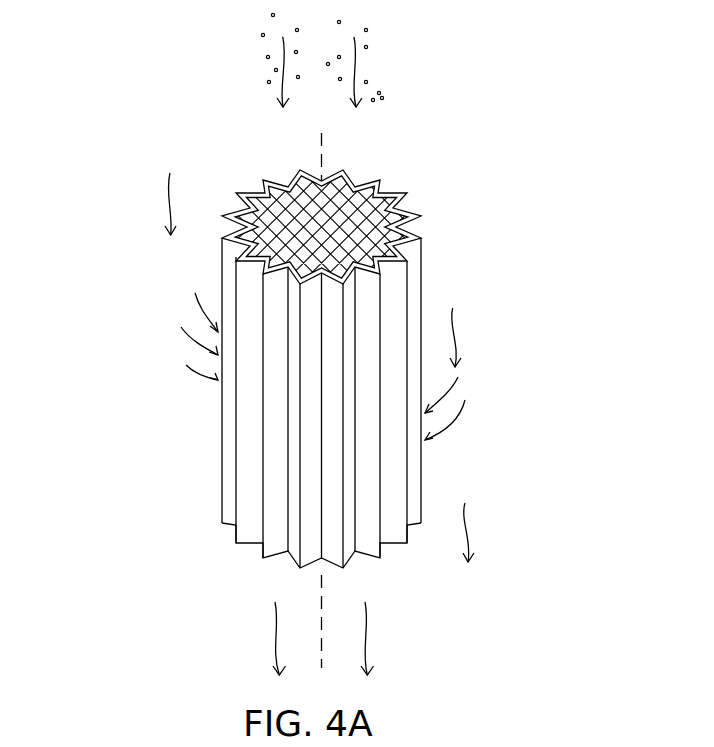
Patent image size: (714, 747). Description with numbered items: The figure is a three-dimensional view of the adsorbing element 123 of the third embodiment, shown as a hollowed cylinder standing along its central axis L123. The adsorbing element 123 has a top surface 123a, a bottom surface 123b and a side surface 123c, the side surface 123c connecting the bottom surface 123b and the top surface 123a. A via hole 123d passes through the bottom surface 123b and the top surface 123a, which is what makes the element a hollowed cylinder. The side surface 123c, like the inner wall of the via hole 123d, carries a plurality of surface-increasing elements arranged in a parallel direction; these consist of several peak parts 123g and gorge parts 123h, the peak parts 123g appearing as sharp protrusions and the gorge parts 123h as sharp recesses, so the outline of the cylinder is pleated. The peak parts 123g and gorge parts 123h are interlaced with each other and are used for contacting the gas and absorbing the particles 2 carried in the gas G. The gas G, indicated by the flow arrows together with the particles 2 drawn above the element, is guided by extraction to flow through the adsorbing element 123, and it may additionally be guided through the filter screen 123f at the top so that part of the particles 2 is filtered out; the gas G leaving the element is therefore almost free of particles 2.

The adsorbing element 123 is at (630, 566).
The top surface 123a is at (417, 215).
The bottom surface 123b is at (393, 551).
The side surface 123c is at (198, 440).
The via hole 123d is at (257, 197).
The filter screen 123f is at (272, 192).
The peak parts 123g is at (407, 193).
The gorge parts 123h is at (380, 190).
The particles 2 is at (425, 445).
The central axis of filter L123 is at (327, 396).
The gas G is at (332, 344).